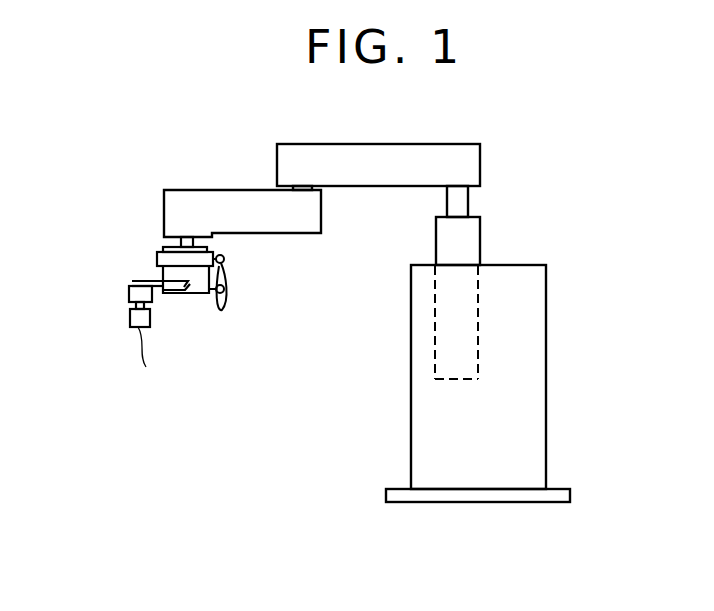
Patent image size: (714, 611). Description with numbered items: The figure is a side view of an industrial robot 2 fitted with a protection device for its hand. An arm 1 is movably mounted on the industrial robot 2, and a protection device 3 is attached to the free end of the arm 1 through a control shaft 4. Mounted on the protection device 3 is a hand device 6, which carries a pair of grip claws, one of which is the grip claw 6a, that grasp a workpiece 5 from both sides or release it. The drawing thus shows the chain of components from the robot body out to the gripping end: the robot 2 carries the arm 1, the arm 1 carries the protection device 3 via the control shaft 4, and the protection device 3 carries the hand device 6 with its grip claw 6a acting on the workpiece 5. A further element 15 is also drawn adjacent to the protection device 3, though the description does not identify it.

The arm 1 is at (240, 200).
The industrial robot 2 is at (527, 409).
The protection device 3 is at (196, 290).
The control shaft 4 is at (193, 240).
The workpiece 5 is at (130, 317).
The hand device 6 is at (132, 290).
The grip claw 6a is at (145, 363).
The link 15 is at (223, 287).